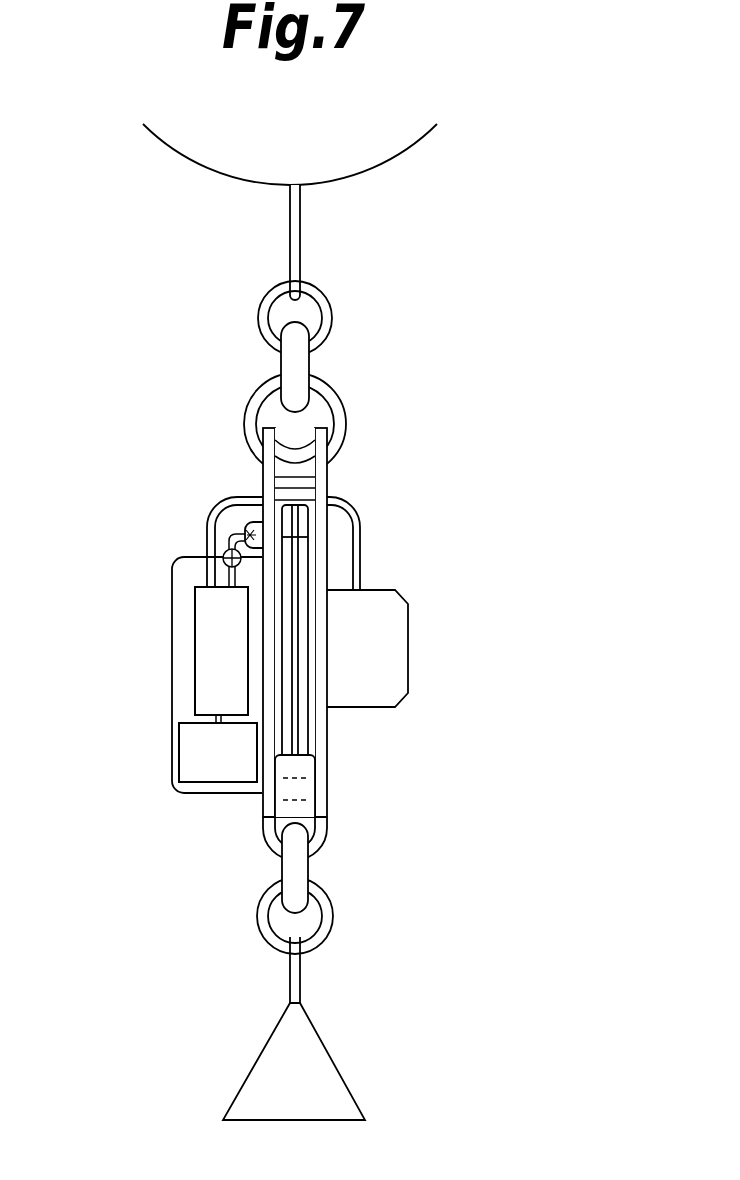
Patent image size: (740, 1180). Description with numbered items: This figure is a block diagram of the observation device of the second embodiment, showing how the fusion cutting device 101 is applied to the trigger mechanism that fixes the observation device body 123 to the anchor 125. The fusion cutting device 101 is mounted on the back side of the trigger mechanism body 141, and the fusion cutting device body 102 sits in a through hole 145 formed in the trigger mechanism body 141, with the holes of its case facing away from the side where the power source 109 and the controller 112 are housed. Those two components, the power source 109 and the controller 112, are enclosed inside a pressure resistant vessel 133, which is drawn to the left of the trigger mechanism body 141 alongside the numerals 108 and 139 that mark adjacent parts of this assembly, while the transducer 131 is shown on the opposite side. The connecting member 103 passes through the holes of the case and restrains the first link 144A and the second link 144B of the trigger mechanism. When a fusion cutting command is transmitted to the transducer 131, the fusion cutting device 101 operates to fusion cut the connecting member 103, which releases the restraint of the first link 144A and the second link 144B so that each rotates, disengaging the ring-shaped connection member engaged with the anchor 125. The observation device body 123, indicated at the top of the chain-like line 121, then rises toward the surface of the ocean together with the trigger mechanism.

The fusion cutting device 101 is at (140, 457).
The fusion cutting device body 102 is at (213, 511).
The connecting member 103 is at (308, 528).
The housing wall 108 is at (210, 580).
The power source 109 is at (179, 762).
The controller 112 is at (195, 690).
The fishing line assembly 121 is at (458, 448).
The observation device body 123 is at (368, 175).
The anchor 125 is at (332, 1057).
The transducer 131 is at (410, 615).
The pressure resistant vessel 133 is at (173, 638).
The valve 139 is at (223, 551).
The trigger mechanism body 141 is at (263, 462).
The first link 144A is at (308, 727).
The second link 144B is at (290, 745).
The through hole 145 is at (258, 523).